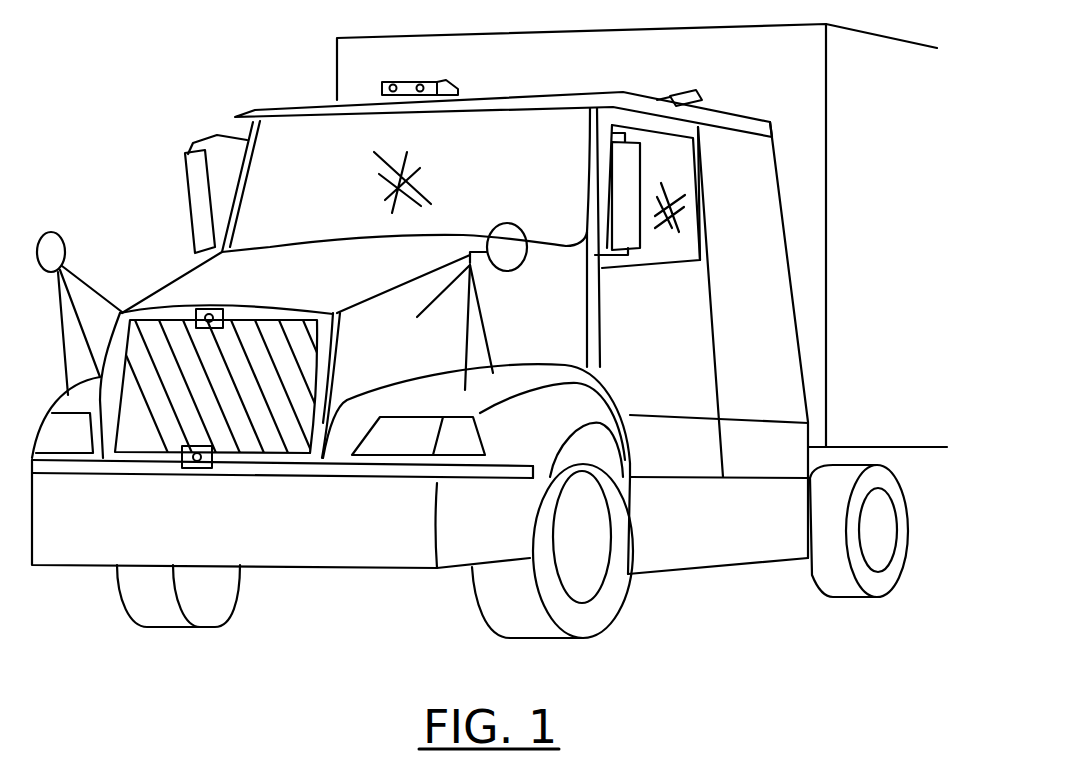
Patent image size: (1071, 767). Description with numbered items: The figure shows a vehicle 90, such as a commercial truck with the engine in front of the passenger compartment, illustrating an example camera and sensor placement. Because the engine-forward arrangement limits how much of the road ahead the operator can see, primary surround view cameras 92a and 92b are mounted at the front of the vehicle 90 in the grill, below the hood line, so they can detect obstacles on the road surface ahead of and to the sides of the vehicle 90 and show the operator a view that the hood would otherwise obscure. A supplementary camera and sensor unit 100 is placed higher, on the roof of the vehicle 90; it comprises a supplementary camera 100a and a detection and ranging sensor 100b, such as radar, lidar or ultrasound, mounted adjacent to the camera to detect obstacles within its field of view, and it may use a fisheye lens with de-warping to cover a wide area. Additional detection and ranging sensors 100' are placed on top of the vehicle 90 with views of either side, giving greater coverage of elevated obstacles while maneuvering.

The vehicle 90 is at (277, 103).
The supplementary camera and sensor unit 100 is at (466, 71).
The supplementary camera 100a is at (446, 68).
The detection and ranging sensor 100b is at (392, 84).
The detection and ranging sensors 100' is at (710, 85).
The primary surround view camera 92a is at (200, 472).
The primary surround view camera 92b is at (213, 312).